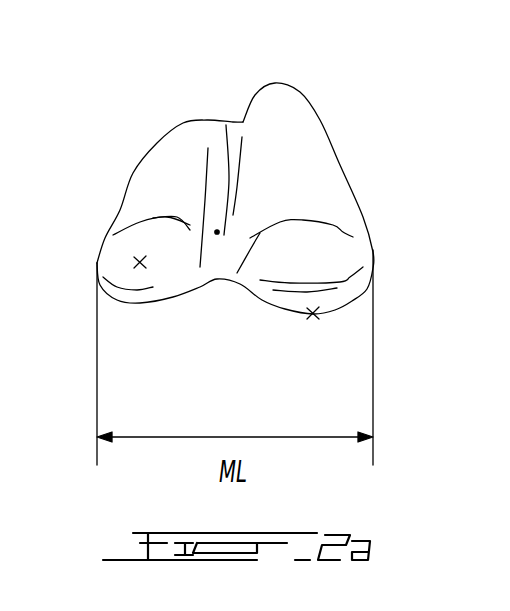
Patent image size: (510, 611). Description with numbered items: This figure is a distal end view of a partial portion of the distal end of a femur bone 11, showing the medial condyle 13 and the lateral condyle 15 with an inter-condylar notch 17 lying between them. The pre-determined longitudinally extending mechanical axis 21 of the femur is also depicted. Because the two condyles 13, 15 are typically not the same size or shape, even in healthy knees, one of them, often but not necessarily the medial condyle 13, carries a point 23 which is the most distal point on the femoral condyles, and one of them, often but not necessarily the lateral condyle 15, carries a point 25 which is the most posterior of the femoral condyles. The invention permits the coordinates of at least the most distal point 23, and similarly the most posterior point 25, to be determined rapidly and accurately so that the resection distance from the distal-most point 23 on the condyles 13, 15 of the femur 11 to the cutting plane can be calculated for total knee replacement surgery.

The femur bone 11 is at (317, 71).
The medial condyle 13 is at (148, 193).
The lateral condyle 15 is at (322, 182).
The central groove 17 is at (226, 160).
The mechanical axis 21 is at (217, 232).
The most distal point 23 is at (140, 262).
The most posterior point 25 is at (313, 313).